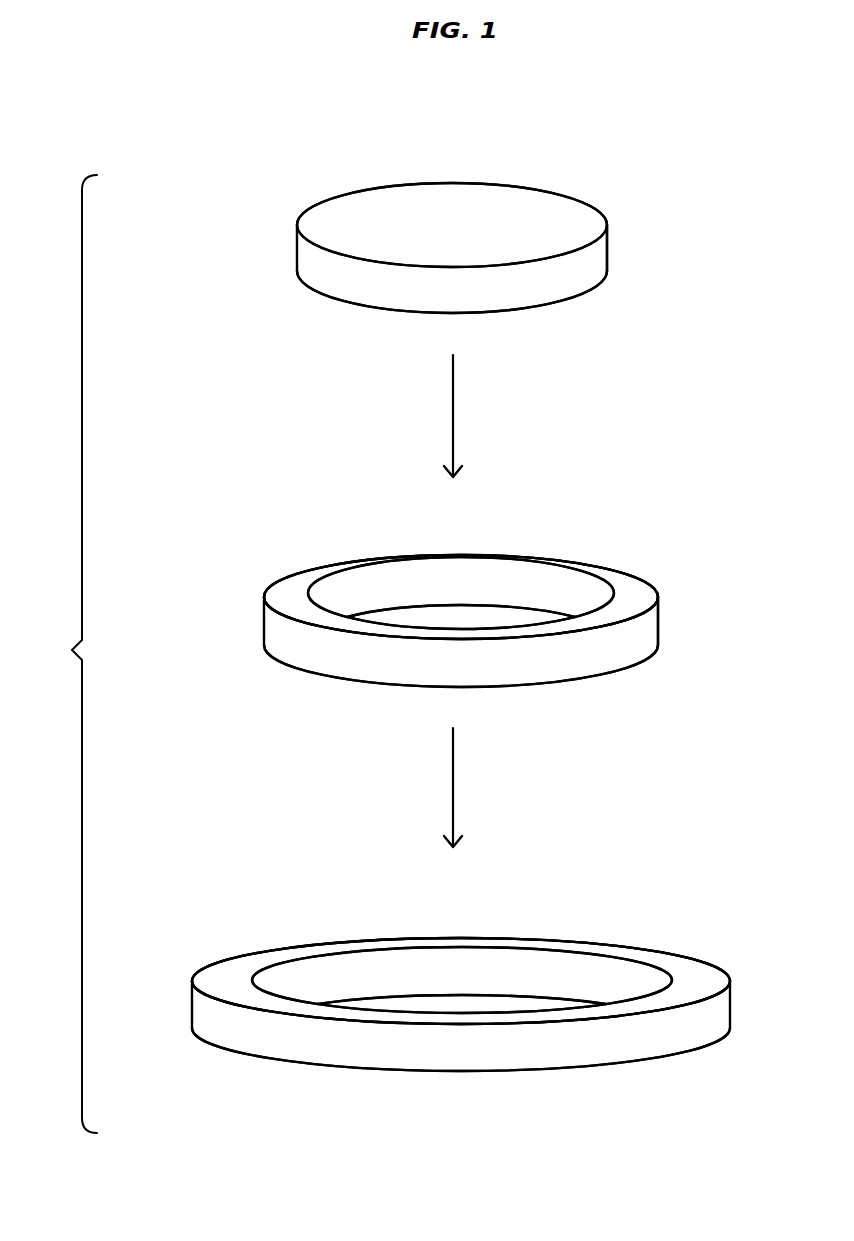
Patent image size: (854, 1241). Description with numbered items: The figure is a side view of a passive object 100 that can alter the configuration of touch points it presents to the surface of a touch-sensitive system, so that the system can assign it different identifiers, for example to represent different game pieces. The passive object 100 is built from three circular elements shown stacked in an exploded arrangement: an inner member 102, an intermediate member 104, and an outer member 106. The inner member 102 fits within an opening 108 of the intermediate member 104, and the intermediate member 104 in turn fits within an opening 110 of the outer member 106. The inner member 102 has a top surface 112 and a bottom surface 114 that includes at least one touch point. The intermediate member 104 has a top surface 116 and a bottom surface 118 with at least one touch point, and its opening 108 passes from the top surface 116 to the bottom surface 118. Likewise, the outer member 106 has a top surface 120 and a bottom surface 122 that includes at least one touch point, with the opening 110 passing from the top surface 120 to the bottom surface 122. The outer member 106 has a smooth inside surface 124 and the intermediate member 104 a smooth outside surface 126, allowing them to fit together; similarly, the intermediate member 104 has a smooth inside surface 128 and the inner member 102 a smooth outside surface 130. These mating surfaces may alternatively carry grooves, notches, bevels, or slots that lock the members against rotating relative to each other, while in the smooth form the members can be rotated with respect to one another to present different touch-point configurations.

The passive object 100 is at (63, 654).
The inner member 102 is at (582, 282).
The intermediate member 104 is at (597, 658).
The outer member 106 is at (642, 1042).
The opening 108 is at (517, 588).
The opening 110 is at (570, 982).
The top surface 112 is at (338, 218).
The bottom surface 114 is at (367, 313).
The top surface 116 is at (290, 605).
The bottom surface 118 is at (318, 678).
The top surface 120 is at (225, 983).
The bottom surface 122 is at (275, 1063).
The inside surface 124 is at (337, 983).
The outside surface 126 is at (652, 627).
The inside surface 128 is at (397, 588).
The outside surface 130 is at (603, 257).